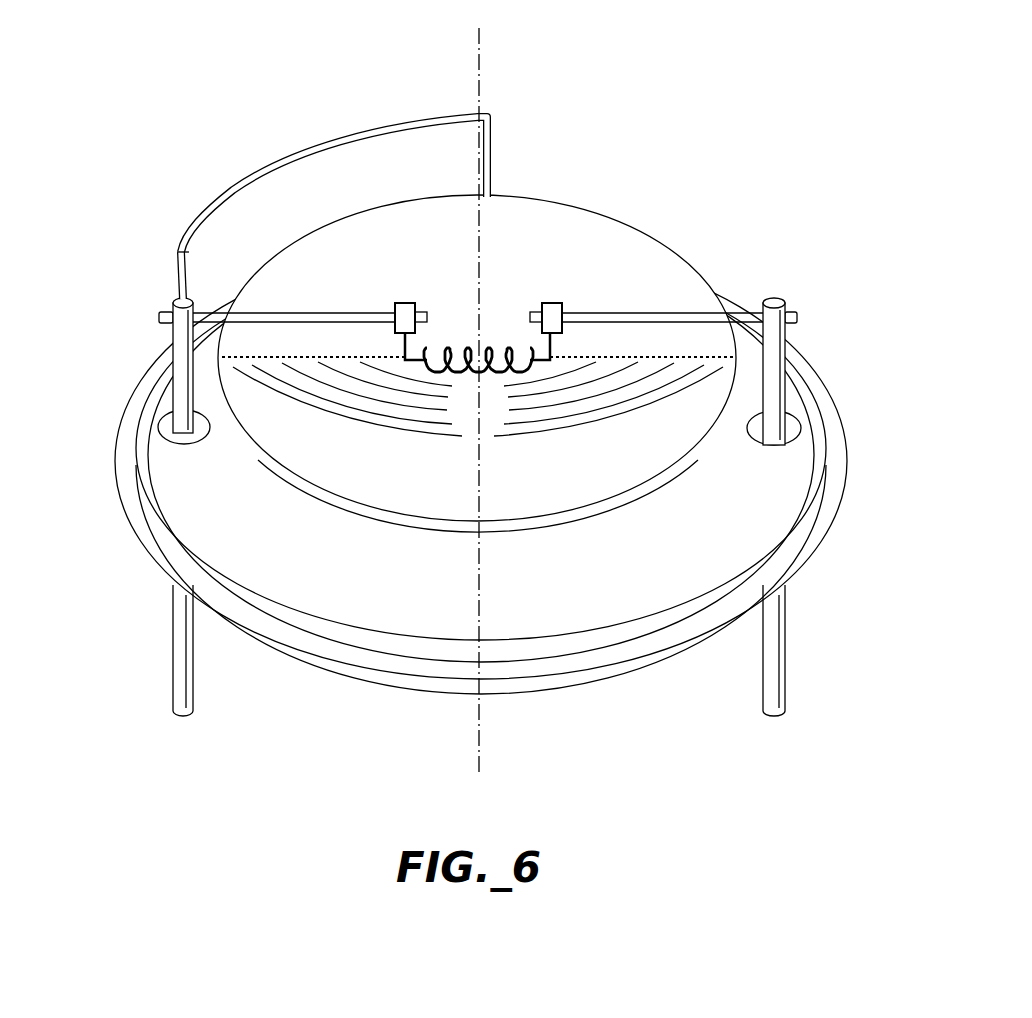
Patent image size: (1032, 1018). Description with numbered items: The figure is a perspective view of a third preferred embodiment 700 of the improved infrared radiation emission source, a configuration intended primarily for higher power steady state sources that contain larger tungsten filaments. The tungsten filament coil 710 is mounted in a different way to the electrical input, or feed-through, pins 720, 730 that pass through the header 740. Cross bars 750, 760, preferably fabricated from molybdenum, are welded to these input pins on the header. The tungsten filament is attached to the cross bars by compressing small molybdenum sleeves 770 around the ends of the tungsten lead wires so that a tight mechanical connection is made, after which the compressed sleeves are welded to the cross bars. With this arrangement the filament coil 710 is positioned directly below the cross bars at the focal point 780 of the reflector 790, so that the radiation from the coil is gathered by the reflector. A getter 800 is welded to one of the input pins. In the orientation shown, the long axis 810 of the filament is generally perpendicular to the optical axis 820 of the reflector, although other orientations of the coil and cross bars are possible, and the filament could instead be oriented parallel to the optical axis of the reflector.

The third preferred embodiment 700 is at (795, 110).
The tungsten filament coil 710 is at (518, 384).
The electrical input pin 720 is at (782, 349).
The electrical input pin 730 is at (178, 362).
The header 740 is at (205, 560).
The cross bar 750 is at (700, 272).
The cross bar 760 is at (162, 275).
The molybdenum sleeves 770 is at (405, 262).
The focal point 780 is at (477, 375).
The reflector 790 is at (290, 424).
The getter 800 is at (250, 108).
The long axis 810 is at (224, 440).
The optical axis 820 is at (482, 48).